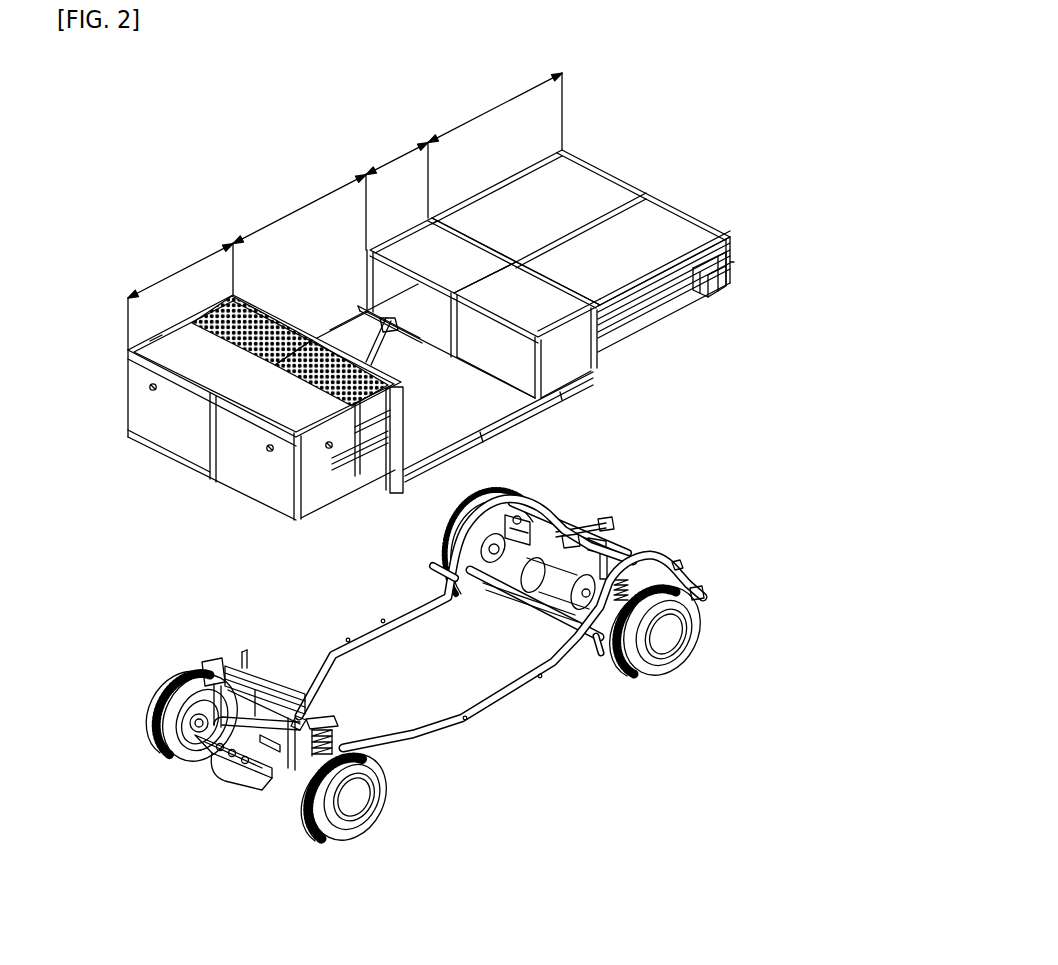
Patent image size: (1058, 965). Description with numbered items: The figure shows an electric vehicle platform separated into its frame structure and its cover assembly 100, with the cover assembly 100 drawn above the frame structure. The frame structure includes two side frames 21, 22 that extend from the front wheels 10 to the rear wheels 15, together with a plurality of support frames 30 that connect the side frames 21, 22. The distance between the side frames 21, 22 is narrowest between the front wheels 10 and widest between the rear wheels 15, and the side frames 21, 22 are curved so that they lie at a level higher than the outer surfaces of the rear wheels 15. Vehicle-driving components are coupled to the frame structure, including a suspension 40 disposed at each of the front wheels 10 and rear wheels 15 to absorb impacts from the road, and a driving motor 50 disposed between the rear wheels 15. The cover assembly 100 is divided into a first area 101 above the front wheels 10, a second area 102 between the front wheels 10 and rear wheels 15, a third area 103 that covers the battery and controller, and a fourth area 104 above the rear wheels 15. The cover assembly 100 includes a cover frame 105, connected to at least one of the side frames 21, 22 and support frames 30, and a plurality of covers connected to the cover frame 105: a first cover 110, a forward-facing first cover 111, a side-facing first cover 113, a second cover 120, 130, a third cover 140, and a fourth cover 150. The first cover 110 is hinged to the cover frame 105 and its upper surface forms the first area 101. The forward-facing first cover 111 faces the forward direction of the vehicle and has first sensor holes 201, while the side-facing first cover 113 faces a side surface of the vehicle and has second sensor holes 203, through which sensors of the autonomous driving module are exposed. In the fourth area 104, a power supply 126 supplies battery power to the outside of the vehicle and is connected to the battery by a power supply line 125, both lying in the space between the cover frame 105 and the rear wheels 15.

The cover assembly 100 is at (447, 321).
The first area 101 is at (180, 297).
The second area 102 is at (299, 235).
The third area 103 is at (389, 194).
The fourth area 104 is at (495, 145).
The cover frame 105 is at (733, 268).
The first cover 110 is at (241, 421).
The first-1 cover 111 is at (277, 490).
The first-2 cover 113 is at (341, 452).
The second cover 120 is at (560, 315).
The power supply line 125 is at (655, 293).
The power supply 126 is at (714, 290).
The second cover 130 is at (408, 265).
The third cover 140 is at (700, 232).
The fourth cover 150 is at (447, 432).
The first sensor holes 201 is at (272, 451).
The second sensor holes 203 is at (328, 449).
The front wheels 10 is at (380, 786).
The rear wheels 15 is at (648, 680).
The side frame 21 is at (487, 707).
The side frame 22 is at (392, 612).
The support frames 30 is at (553, 633).
The suspension 40 is at (345, 725).
The driving motor 50 is at (530, 598).